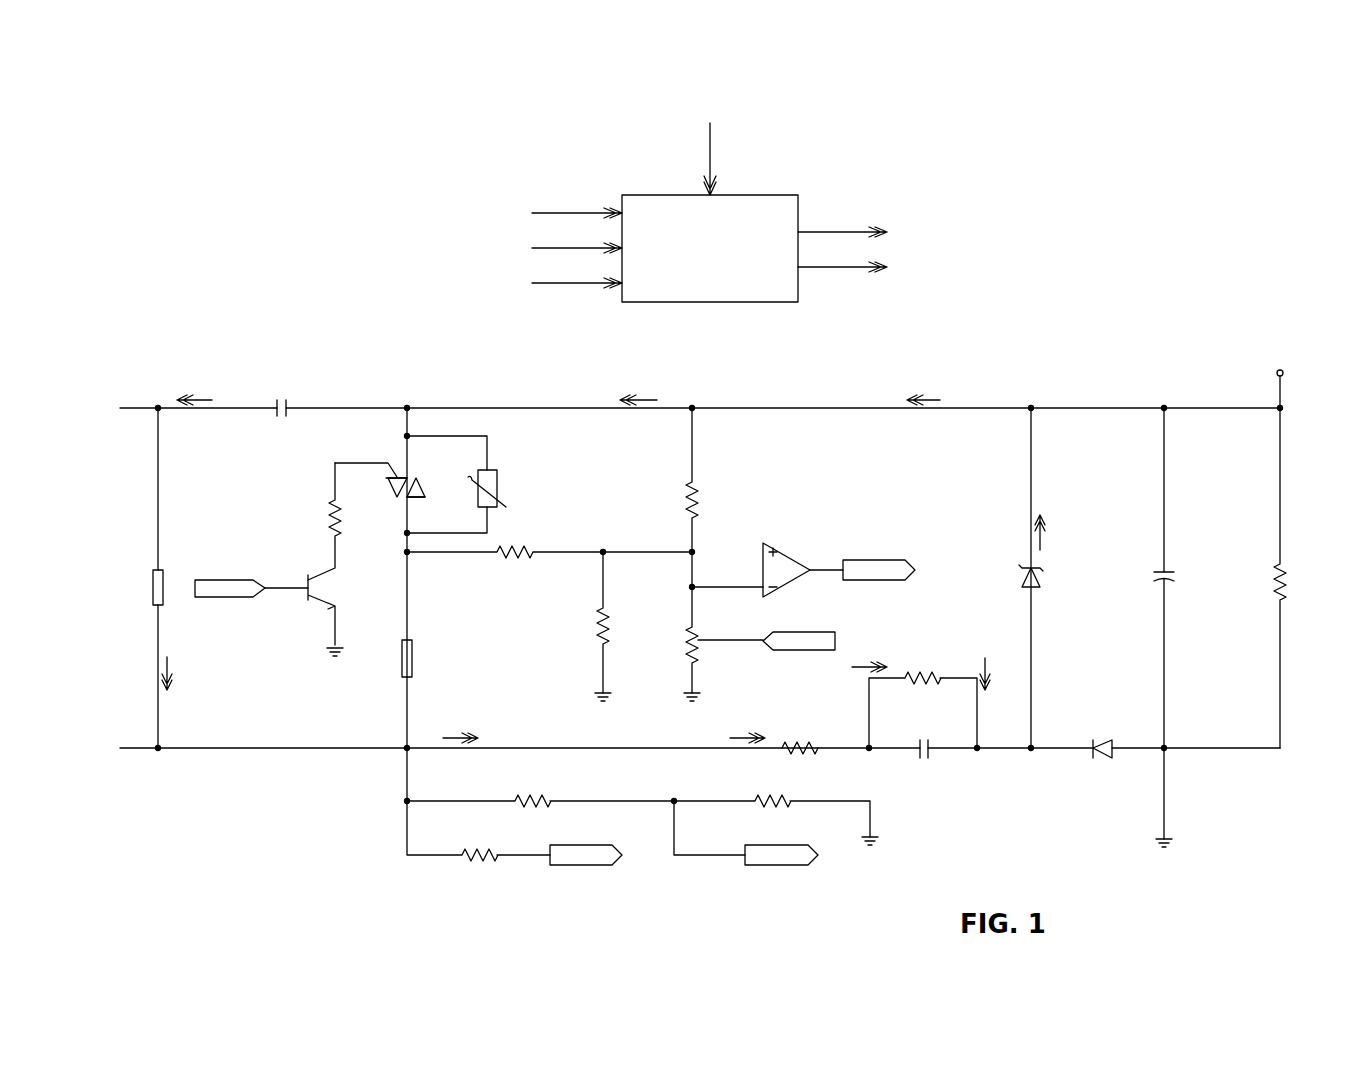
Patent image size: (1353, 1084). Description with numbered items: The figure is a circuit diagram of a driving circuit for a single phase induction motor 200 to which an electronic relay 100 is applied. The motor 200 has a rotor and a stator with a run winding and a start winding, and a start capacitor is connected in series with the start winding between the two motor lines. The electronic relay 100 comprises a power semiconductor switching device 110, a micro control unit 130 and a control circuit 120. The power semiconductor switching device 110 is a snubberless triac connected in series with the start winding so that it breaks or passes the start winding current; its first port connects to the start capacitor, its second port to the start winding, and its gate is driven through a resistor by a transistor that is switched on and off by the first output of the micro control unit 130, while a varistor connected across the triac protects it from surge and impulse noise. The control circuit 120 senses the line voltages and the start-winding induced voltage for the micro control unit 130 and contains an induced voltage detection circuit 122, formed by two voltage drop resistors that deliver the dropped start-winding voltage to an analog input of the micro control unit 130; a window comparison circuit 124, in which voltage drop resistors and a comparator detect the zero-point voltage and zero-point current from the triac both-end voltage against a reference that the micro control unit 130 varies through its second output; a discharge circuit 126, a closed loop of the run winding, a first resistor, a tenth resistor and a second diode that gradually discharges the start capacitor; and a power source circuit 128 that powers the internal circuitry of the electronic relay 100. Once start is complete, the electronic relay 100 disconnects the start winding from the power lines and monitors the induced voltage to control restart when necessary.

The electronic relay 100 is at (980, 343).
The power semiconductor switching device 110 is at (430, 452).
The control circuit 120 is at (762, 435).
The induced voltage detection circuit 122 is at (622, 790).
The window comparison circuit 124 is at (727, 535).
The discharge circuit 126 is at (652, 399).
The power source circuit 128 is at (1245, 510).
The micro control unit (MCU) 130 is at (798, 195).
The single phase induction motor 200 is at (232, 375).